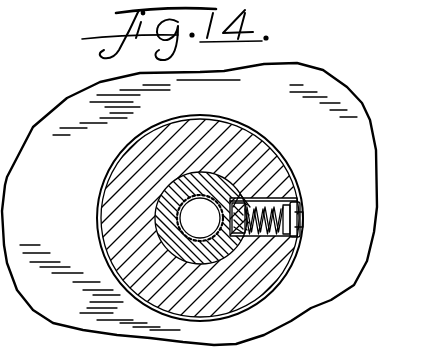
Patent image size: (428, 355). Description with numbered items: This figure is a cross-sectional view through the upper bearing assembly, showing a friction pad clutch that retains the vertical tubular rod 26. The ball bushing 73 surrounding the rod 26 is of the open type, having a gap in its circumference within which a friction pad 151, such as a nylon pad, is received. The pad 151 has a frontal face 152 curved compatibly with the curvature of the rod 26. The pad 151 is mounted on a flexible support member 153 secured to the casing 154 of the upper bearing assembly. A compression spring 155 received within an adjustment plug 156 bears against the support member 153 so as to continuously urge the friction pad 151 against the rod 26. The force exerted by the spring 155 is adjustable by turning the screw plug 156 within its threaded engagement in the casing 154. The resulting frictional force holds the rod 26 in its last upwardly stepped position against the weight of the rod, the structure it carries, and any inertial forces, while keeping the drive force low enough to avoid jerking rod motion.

The tubular rod 26 is at (176, 207).
The ball bushing 73 is at (222, 174).
The friction pad 151 is at (283, 192).
The frontal face 152 is at (228, 198).
The flexible support member 153 is at (232, 250).
The casing 154 is at (100, 231).
The compression spring 155 is at (300, 204).
The adjustment plug 156 is at (301, 231).